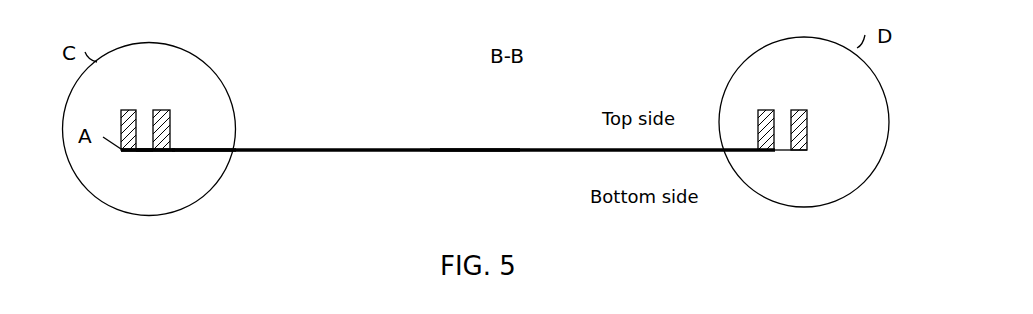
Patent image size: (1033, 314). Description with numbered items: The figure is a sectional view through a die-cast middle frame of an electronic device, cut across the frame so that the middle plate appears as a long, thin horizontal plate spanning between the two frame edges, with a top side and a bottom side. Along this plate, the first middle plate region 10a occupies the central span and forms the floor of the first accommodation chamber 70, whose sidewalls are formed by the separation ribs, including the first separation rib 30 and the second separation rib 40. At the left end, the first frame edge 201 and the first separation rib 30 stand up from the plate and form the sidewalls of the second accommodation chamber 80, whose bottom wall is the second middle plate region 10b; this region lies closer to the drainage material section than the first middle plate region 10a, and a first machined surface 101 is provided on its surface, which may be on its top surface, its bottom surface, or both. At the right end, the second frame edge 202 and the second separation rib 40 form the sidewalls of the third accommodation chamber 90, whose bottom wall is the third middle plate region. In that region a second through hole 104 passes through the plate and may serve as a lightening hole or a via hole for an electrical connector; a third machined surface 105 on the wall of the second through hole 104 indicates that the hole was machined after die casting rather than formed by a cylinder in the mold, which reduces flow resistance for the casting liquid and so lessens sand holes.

The first accommodation chamber 70 is at (378, 143).
The first middle plate region 10a is at (457, 147).
The second middle plate region 10b is at (143, 152).
The first machined surface 101 is at (204, 133).
The first frame edge 201 is at (128, 108).
The first separation rib 30 is at (163, 113).
The second accommodation chamber 80 is at (148, 116).
The second separation rib 40 is at (765, 107).
The second frame edge 202 is at (798, 107).
The third accommodation chamber 90 is at (780, 120).
The second through hole 104 is at (780, 148).
The third machined surface 105 is at (800, 149).